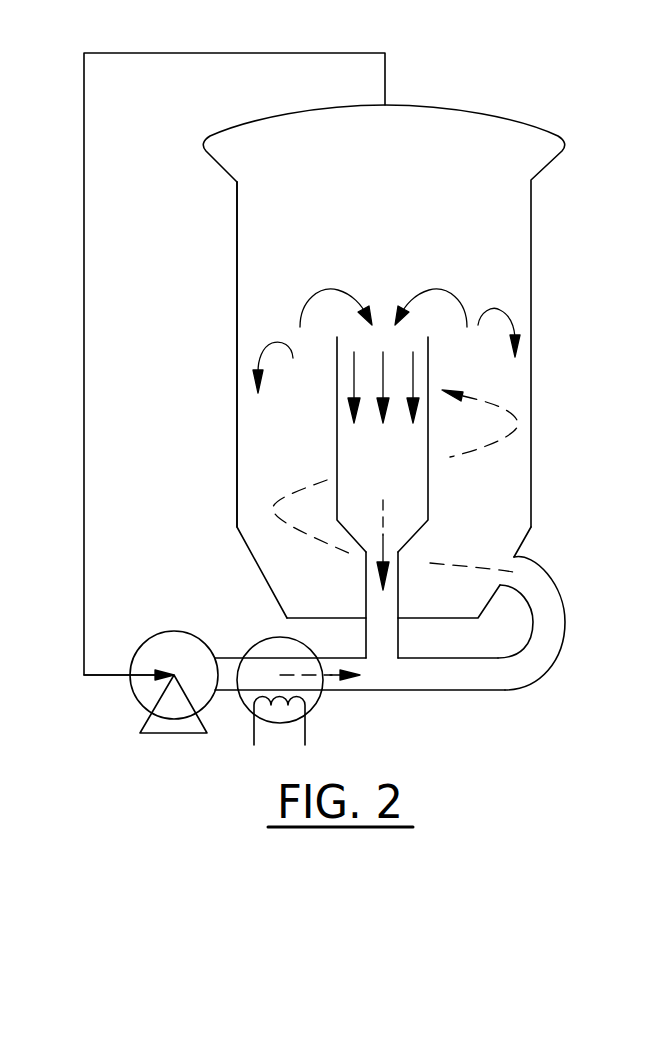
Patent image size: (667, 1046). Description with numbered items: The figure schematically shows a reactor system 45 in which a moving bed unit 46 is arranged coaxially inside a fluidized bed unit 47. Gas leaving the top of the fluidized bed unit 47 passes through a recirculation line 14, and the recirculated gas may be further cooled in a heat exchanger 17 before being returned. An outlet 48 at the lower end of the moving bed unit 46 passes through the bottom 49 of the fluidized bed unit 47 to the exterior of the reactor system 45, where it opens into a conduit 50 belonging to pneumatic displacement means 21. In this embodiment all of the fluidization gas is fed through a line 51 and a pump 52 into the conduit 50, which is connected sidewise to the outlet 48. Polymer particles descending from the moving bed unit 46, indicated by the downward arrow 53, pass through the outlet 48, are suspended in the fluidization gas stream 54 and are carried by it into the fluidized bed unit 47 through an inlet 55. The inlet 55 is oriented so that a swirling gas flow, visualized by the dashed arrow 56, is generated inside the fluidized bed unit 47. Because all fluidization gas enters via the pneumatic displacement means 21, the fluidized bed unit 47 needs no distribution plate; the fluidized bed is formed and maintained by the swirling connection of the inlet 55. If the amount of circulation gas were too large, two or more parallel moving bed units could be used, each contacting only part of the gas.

The recirculation line 14 is at (142, 53).
The heat exchanger 17 is at (278, 718).
The pneumatic displacement means 21 is at (233, 732).
The reactor system 45 is at (568, 208).
The moving bed unit 46 is at (335, 448).
The fluidized bed unit 47 is at (237, 492).
The outlet 48 is at (366, 577).
The bottom 49 is at (332, 618).
The conduit 50 is at (415, 690).
The line 51 is at (106, 675).
The pump 52 is at (180, 645).
The central downward stream 53 is at (383, 535).
The fluidization gas stream 54 is at (350, 677).
The inlet 55 is at (535, 560).
The dashed arrow 56 is at (462, 563).